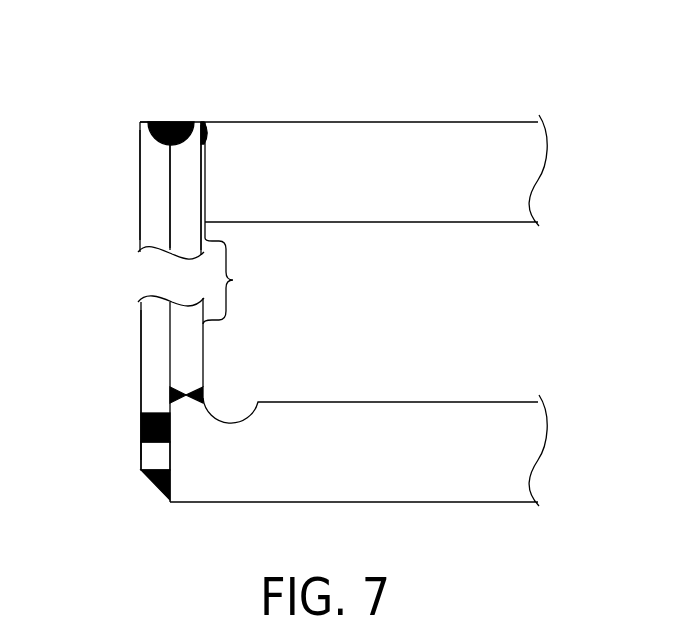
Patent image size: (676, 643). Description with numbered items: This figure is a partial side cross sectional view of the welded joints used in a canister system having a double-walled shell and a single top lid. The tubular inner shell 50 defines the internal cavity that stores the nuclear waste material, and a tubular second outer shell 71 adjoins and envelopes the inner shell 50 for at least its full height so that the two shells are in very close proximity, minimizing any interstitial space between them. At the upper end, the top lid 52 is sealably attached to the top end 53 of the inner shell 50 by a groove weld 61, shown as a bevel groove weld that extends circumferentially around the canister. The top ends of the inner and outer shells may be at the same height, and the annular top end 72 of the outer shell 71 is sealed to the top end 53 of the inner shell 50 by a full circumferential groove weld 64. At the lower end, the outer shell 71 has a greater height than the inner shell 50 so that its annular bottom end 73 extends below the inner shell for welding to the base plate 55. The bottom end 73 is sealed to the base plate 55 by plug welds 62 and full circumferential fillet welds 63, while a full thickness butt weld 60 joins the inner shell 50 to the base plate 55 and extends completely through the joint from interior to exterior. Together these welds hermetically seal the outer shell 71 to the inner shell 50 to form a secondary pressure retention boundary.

The shell 50 is at (203, 312).
The top lid 52 is at (427, 122).
The top end 53 is at (200, 122).
The base plate 55 is at (413, 427).
The butt weld 60 is at (203, 391).
The groove weld 61 is at (212, 122).
The plug welds 62 is at (140, 430).
The fillet welds 63 is at (157, 488).
The groove weld 64 is at (168, 122).
The outer shell 71 is at (140, 227).
The top end 72 is at (143, 122).
The bottom end 73 is at (158, 470).